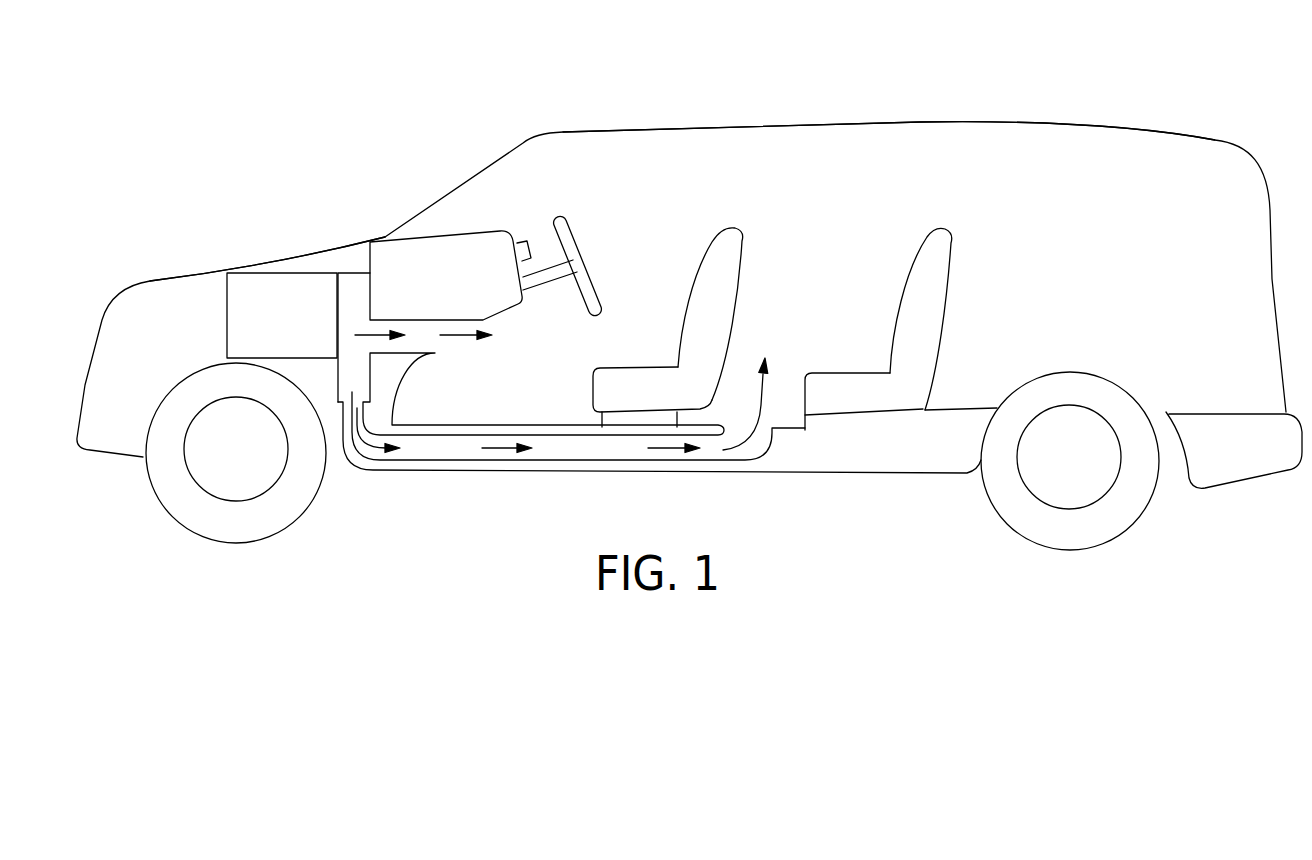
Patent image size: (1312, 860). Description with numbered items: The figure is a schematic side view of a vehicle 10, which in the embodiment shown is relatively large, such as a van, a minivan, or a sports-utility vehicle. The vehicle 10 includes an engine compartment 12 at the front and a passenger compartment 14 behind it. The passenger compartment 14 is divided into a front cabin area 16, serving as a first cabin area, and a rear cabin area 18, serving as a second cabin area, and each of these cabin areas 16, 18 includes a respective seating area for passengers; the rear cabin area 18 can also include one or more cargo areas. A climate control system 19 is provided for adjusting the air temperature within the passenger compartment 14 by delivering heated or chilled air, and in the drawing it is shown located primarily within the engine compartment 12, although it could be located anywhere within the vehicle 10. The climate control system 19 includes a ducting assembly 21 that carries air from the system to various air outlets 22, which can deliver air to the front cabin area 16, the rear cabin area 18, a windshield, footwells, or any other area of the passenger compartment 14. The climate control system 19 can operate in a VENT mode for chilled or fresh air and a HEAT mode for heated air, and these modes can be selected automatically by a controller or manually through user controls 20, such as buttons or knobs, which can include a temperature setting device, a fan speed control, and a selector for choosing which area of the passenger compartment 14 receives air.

The vehicle 10 is at (376, 135).
The engine compartment 12 is at (273, 264).
The passenger compartment 14 is at (896, 150).
The front cabin area 16 is at (638, 285).
The rear cabin area 18 is at (845, 295).
The climate control system 19 is at (325, 272).
The user controls 20 is at (530, 244).
The ducting assembly 21 is at (428, 318).
The air outlets 22 is at (430, 342).